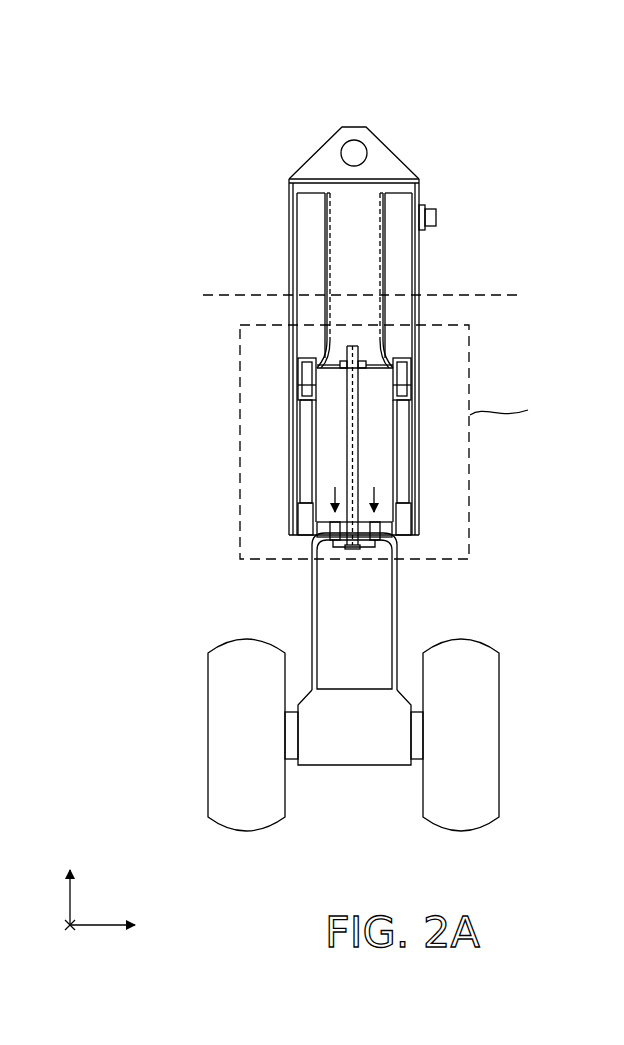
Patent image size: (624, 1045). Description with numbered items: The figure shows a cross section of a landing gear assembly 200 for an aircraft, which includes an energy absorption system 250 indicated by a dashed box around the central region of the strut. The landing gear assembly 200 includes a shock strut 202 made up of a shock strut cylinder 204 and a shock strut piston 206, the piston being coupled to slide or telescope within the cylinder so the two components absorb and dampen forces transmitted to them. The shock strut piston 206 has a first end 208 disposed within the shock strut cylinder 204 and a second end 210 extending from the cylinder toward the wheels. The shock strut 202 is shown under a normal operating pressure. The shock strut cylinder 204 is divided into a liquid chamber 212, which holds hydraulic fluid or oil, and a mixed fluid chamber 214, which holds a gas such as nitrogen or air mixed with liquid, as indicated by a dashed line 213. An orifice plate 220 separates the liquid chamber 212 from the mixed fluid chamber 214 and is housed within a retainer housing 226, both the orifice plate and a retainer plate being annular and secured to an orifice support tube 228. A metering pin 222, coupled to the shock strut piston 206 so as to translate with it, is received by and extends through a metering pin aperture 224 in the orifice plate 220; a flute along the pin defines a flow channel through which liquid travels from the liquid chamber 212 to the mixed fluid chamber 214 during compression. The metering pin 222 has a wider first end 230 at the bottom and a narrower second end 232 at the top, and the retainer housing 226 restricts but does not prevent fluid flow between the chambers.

The landing gear assembly 200 is at (155, 152).
The shock strut 202 is at (415, 136).
The shock strut cylinder 204 is at (293, 223).
The shock strut piston 206 is at (395, 650).
The first end 208 is at (312, 413).
The second end 210 is at (312, 600).
The liquid chamber 212 is at (380, 442).
The line 213 is at (275, 294).
The mixed fluid chamber 214 is at (394, 236).
The orifice plate 220 is at (335, 365).
The metering pin 222 is at (350, 440).
The metering pin aperture 224 is at (348, 344).
The retainer housing 226 is at (340, 362).
The orifice support tube 228 is at (384, 283).
The first end 230 is at (358, 520).
The second end 232 is at (365, 352).
The energy absorption system 250 is at (230, 403).